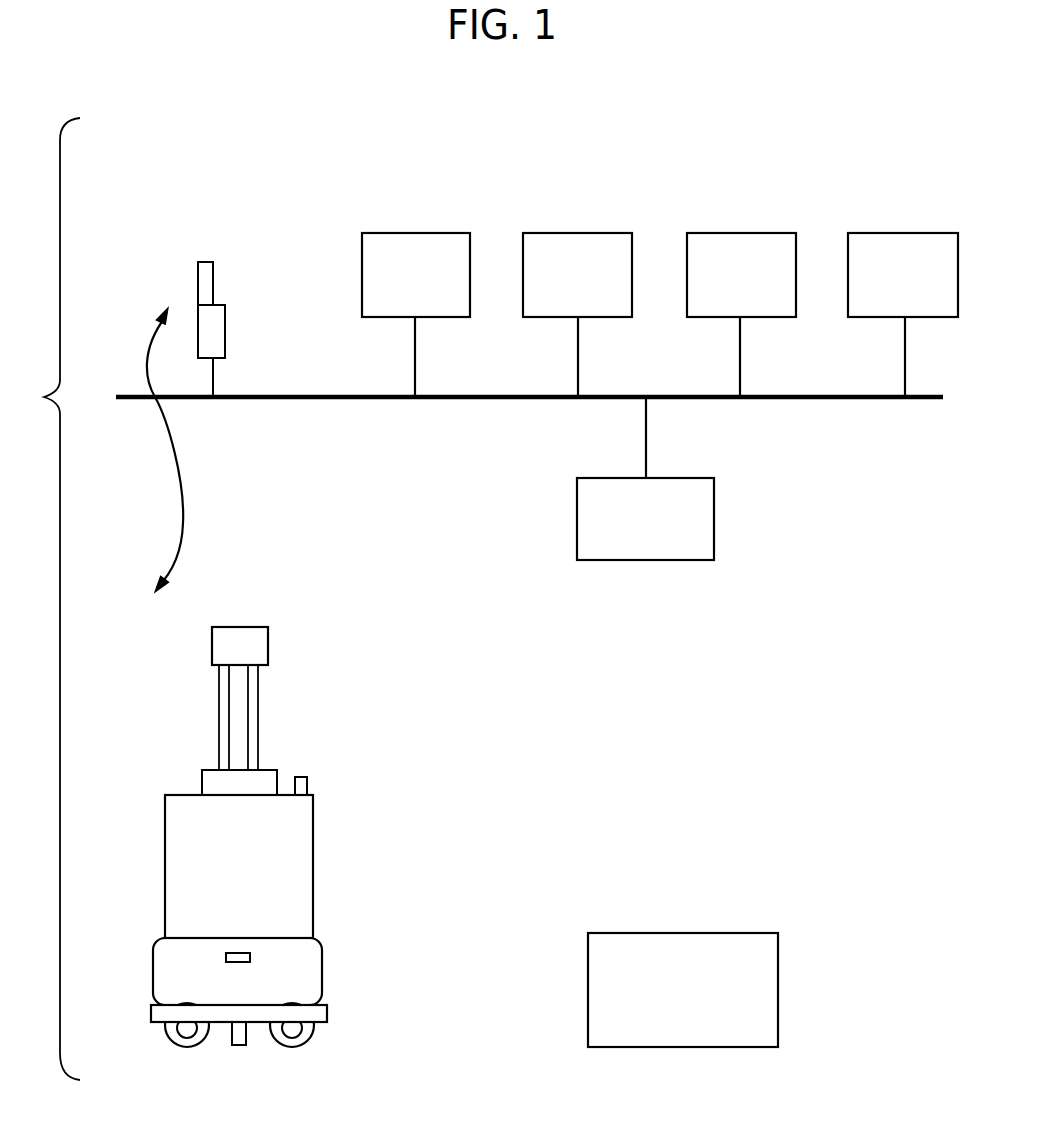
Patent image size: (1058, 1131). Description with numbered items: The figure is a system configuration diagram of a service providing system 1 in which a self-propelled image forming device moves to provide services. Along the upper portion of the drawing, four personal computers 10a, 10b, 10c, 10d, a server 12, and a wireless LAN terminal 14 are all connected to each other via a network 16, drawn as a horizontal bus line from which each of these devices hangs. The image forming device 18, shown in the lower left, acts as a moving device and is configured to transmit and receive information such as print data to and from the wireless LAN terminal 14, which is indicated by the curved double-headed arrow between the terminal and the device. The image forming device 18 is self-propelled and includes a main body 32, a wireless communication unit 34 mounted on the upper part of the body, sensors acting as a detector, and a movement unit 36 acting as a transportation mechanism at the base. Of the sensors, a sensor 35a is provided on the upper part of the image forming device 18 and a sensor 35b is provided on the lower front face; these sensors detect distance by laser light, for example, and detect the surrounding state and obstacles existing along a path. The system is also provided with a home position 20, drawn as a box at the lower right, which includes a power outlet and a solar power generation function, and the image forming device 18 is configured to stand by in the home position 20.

The service providing system 1 is at (643, 89).
The personal computer 10a is at (401, 232).
The personal computer 10b is at (578, 232).
The personal computer 10c is at (718, 232).
The personal computer 10d is at (881, 232).
The server 12 is at (714, 517).
The wireless LAN terminal 14 is at (225, 327).
The network 16 is at (770, 400).
The image forming device 18 is at (284, 847).
The home position 20 is at (778, 1000).
The main body 32 is at (313, 843).
The wireless communication unit 34 is at (307, 780).
The sensor 35a is at (268, 640).
The sensor 35b is at (250, 957).
The movement unit 36 is at (313, 1027).